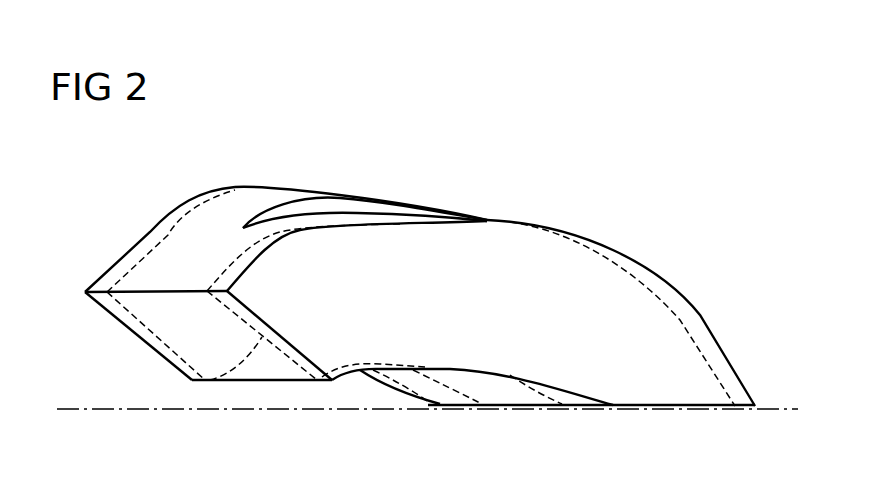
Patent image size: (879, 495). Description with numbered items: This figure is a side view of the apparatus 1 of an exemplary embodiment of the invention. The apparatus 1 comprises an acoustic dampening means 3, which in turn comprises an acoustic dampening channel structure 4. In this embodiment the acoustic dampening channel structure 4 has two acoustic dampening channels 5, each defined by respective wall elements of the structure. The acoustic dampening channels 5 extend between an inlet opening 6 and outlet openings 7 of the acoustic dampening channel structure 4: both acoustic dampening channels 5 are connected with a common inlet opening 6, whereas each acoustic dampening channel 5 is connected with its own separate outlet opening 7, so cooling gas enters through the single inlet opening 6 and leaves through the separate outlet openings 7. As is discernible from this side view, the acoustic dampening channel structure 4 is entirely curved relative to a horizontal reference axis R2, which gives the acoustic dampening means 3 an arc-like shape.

The apparatus 1 is at (428, 300).
The acoustic dampening means 3 is at (150, 242).
The acoustic dampening channel structure 4 is at (608, 218).
The acoustic dampening channel 5 is at (251, 198).
The inlet opening 6 is at (252, 370).
The outlet opening 7 is at (497, 398).
The horizontal reference axis R2 is at (715, 413).